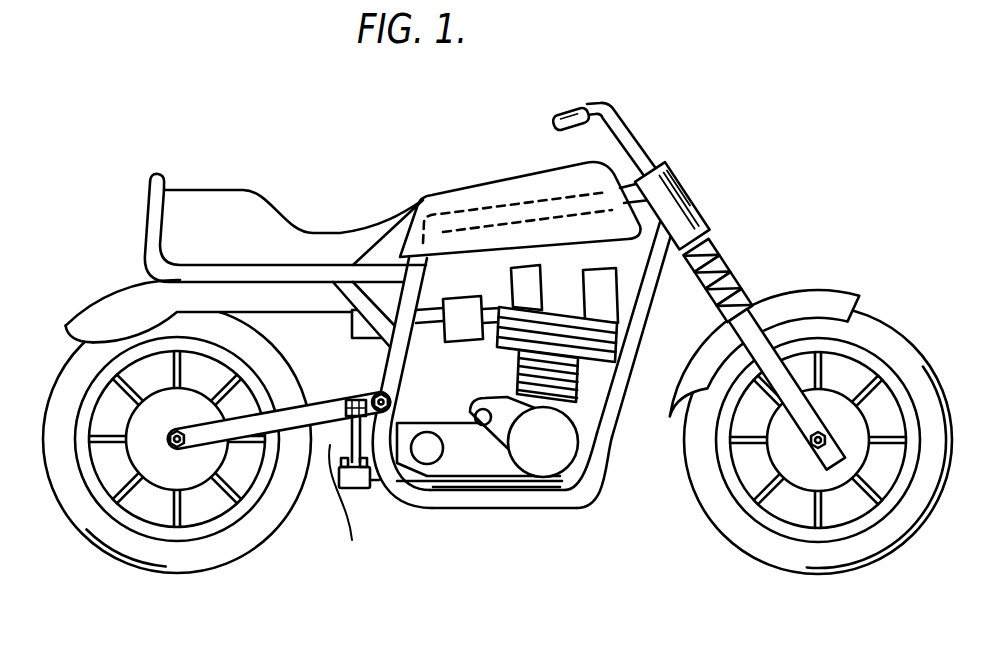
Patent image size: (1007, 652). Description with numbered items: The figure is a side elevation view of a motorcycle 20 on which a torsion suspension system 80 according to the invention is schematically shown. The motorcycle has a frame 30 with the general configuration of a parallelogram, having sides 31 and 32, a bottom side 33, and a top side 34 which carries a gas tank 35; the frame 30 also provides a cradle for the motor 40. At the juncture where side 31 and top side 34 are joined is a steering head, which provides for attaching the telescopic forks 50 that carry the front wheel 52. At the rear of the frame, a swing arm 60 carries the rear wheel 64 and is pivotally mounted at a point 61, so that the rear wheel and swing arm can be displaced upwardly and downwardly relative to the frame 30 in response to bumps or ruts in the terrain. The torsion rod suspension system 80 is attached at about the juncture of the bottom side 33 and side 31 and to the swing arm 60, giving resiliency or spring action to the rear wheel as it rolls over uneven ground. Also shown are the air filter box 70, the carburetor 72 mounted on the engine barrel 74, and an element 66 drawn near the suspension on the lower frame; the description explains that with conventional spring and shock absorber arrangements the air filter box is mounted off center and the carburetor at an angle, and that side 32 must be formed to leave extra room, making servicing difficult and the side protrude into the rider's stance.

The motorcycle 20 is at (366, 154).
The frame 30 is at (503, 393).
The side 31 is at (611, 431).
The side 32 is at (385, 372).
The bottom side 33 is at (470, 505).
The top side 34 is at (492, 205).
The gas tank 35 is at (557, 180).
The motor 40 is at (563, 450).
The telescopic forks 50 is at (788, 308).
The front wheel 52 is at (891, 334).
The swing arm 60 is at (288, 425).
The pivot point 61 is at (412, 388).
The rear wheel 64 is at (257, 550).
The cable 66 is at (348, 511).
The air filter box 70 is at (352, 330).
The carburetor 72 is at (463, 301).
The engine barrel 74 is at (555, 300).
The torsion suspension system 80 is at (373, 484).